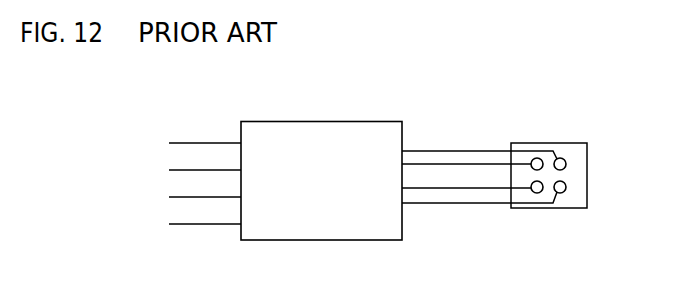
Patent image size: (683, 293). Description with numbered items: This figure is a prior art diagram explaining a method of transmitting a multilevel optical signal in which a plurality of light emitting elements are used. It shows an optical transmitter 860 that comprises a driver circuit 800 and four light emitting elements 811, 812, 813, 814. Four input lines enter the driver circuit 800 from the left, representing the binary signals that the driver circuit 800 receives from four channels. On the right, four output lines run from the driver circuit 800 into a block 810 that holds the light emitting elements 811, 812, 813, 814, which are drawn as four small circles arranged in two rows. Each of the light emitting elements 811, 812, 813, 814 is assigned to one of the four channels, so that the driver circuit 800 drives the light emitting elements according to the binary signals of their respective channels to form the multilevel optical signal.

The optical transmitter 860 is at (206, 124).
The driver circuit 800 is at (338, 121).
The connector 810 is at (588, 157).
The light emitting element 811 is at (537, 158).
The light emitting element 812 is at (560, 158).
The light emitting element 813 is at (562, 194).
The light emitting element 814 is at (537, 194).